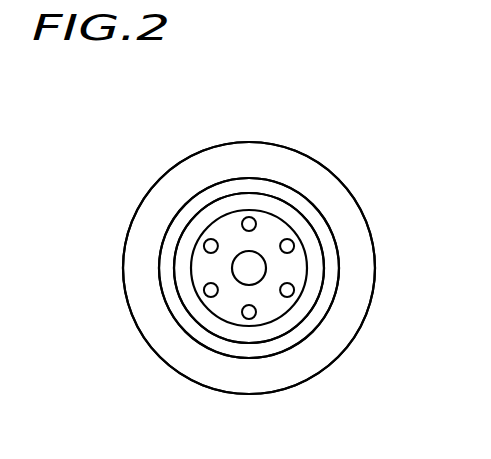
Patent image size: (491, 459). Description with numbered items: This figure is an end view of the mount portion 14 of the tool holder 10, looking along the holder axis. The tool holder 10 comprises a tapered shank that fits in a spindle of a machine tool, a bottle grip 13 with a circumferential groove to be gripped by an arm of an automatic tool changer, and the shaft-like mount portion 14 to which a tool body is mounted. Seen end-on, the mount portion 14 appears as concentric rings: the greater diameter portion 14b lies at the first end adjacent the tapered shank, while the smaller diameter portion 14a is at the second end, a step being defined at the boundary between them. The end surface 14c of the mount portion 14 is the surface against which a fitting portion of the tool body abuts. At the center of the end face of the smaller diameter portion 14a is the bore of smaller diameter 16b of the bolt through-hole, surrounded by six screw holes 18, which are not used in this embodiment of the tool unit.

The tool holder 10 is at (199, 134).
The bottle grip 13 is at (297, 167).
The mount portion 14 is at (333, 290).
The smaller diameter portion 14a is at (202, 268).
The greater diameter portion 14b is at (203, 217).
The end surface of the mount portion 14c is at (308, 206).
The bore of smaller diameter 16b is at (255, 278).
The screw holes 18 is at (298, 245).